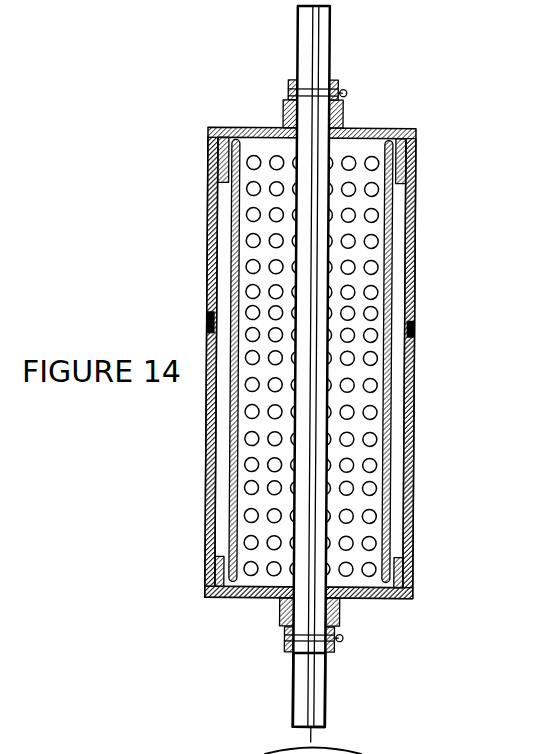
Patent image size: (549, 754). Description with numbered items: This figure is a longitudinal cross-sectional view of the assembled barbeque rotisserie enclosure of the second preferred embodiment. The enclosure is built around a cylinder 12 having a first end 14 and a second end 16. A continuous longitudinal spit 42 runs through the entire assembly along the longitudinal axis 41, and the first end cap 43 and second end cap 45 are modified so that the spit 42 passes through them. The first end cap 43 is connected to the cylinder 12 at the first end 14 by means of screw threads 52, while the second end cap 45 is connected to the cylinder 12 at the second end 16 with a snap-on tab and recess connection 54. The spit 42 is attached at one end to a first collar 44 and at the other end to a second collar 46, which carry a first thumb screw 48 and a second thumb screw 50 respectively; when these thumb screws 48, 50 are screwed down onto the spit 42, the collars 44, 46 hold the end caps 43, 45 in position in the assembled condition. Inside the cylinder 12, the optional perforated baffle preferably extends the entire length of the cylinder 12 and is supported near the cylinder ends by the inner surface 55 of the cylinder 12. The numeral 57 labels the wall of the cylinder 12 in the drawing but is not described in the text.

The cylinder 12 is at (205, 502).
The first end 14 is at (416, 192).
The second end 16 is at (413, 557).
The longitudinal axis 41 is at (315, 0).
The continuous longitudinal spit 42 is at (293, 702).
The first end cap 43 is at (415, 153).
The first collar 44 is at (287, 95).
The second end cap 45 is at (413, 598).
The second collar 46 is at (285, 633).
The first thumb screw 48 is at (347, 93).
The second thumb screw 50 is at (347, 638).
The screw threads 52 is at (207, 170).
The snap-on tab and recess connection 54 is at (204, 580).
The inner surface 55 is at (232, 337).
The housing wall 57 is at (414, 380).